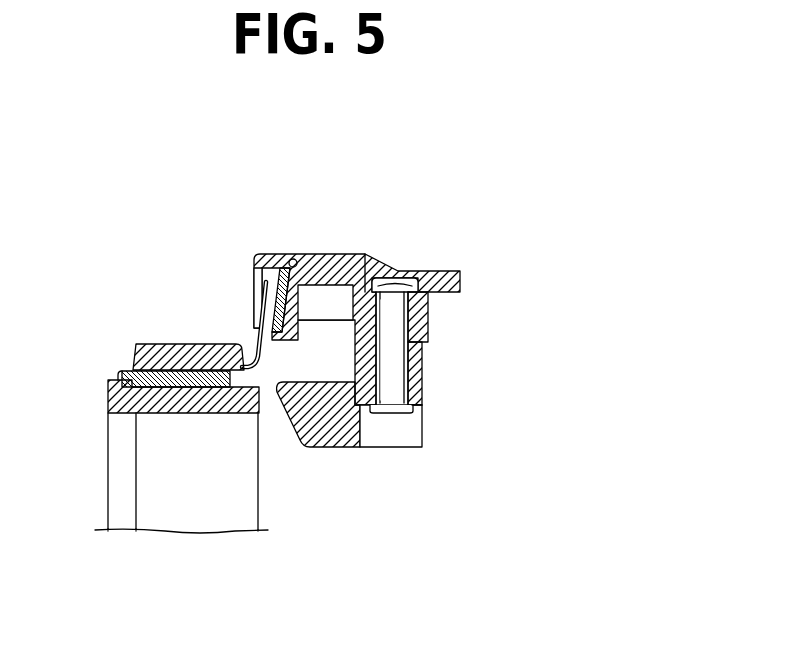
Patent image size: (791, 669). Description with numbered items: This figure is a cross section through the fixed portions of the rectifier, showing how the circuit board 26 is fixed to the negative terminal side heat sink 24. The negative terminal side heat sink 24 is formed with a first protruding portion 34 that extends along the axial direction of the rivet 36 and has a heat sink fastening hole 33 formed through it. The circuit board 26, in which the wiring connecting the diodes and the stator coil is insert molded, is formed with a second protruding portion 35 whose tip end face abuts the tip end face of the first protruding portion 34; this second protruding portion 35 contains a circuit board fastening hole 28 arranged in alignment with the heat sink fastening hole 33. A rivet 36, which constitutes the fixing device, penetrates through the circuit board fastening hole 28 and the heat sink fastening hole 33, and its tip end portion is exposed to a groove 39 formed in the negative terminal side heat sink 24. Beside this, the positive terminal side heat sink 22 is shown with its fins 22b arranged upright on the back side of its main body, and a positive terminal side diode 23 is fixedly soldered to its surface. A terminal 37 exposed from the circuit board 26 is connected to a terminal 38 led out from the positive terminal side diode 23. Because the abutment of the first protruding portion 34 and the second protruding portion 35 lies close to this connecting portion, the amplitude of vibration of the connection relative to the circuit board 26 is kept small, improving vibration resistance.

The positive terminal side heat sink 22 is at (172, 398).
The fins 22b is at (192, 498).
The positive terminal side diode 23 is at (172, 360).
The negative terminal side heat sink 24 is at (322, 423).
The circuit board 26 is at (338, 256).
The circuit board fastening hole 28 is at (400, 277).
The heat sink fastening hole 33 is at (408, 415).
The first protruding portion 34 is at (393, 363).
The second protruding portion 35 is at (428, 310).
The rivet 36 is at (390, 317).
The terminal 37 is at (255, 268).
The terminal 38 is at (262, 340).
The groove 39 is at (393, 427).